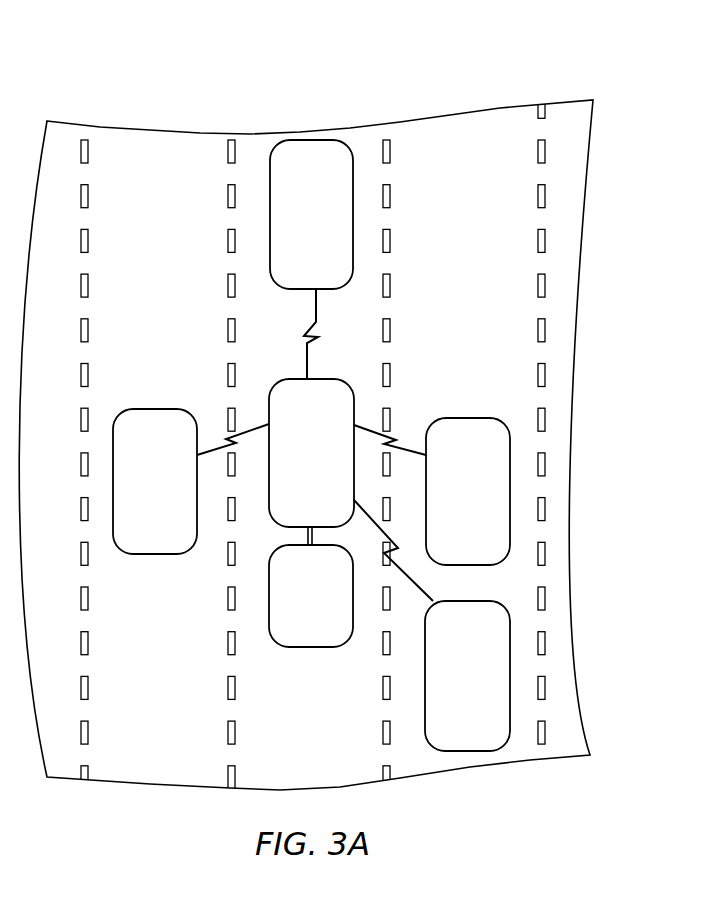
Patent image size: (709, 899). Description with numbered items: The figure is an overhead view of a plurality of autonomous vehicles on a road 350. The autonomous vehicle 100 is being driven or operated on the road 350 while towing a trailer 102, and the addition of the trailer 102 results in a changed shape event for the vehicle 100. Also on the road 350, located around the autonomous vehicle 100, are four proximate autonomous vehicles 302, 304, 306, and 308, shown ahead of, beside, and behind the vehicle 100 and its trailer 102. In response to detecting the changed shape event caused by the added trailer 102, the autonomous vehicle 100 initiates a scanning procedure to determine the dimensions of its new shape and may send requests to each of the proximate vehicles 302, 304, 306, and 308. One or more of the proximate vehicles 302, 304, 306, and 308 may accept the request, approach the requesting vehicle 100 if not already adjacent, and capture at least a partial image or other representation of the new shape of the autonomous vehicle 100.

The road 350 is at (531, 78).
The autonomous vehicle 100 is at (330, 379).
The trailer 102 is at (306, 647).
The proximate autonomous vehicle 302 is at (290, 290).
The proximate autonomous vehicle 304 is at (462, 418).
The proximate autonomous vehicle 306 is at (452, 601).
The proximate autonomous vehicle 308 is at (148, 409).